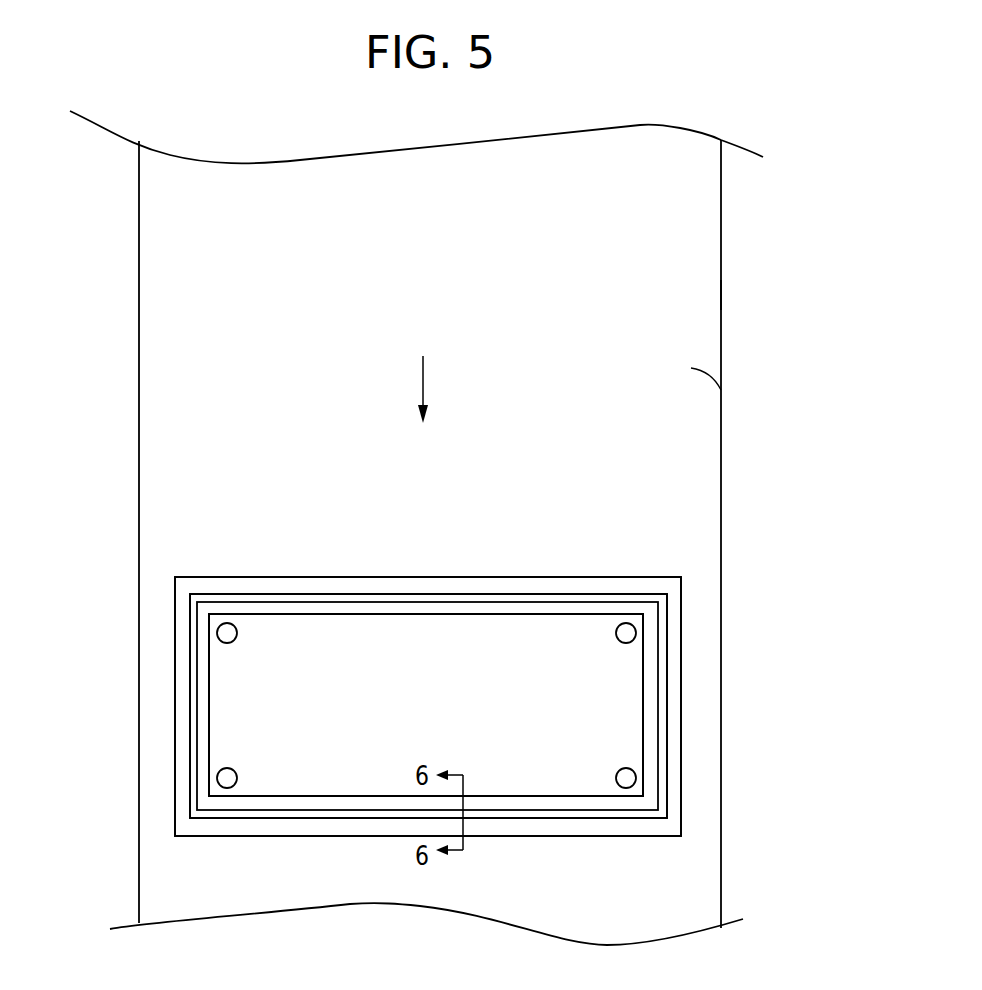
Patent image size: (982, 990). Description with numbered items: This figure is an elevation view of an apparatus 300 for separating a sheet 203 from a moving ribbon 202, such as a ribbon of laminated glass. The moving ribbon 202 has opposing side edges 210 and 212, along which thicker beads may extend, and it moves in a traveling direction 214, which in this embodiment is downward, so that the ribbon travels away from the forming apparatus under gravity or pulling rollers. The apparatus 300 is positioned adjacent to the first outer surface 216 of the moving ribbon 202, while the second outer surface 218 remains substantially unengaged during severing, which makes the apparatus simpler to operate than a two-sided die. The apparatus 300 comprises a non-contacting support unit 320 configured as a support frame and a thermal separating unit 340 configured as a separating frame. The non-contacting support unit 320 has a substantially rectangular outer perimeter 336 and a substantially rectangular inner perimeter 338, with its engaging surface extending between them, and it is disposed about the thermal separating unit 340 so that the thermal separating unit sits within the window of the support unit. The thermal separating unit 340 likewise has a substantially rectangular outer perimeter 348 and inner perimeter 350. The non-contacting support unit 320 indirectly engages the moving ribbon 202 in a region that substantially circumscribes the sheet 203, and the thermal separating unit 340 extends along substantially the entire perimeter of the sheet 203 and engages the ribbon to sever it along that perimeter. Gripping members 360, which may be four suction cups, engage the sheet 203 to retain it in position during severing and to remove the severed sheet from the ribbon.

The moving ribbon 202 is at (424, 287).
The sheet 203 is at (440, 690).
The side edge 210 is at (139, 266).
The side edge 212 is at (721, 212).
The traveling direction 214 is at (423, 384).
The first outer surface 216 is at (721, 390).
The second outer surface 218 is at (721, 296).
The apparatus 300 is at (694, 589).
The non-contacting support unit 320 is at (667, 656).
The outer perimeter 336 is at (478, 577).
The inner perimeter 338 is at (580, 594).
The thermal separating unit 340 is at (647, 710).
The outer perimeter 348 is at (291, 603).
The inner perimeter 350 is at (347, 614).
The gripping members 360 is at (228, 623).